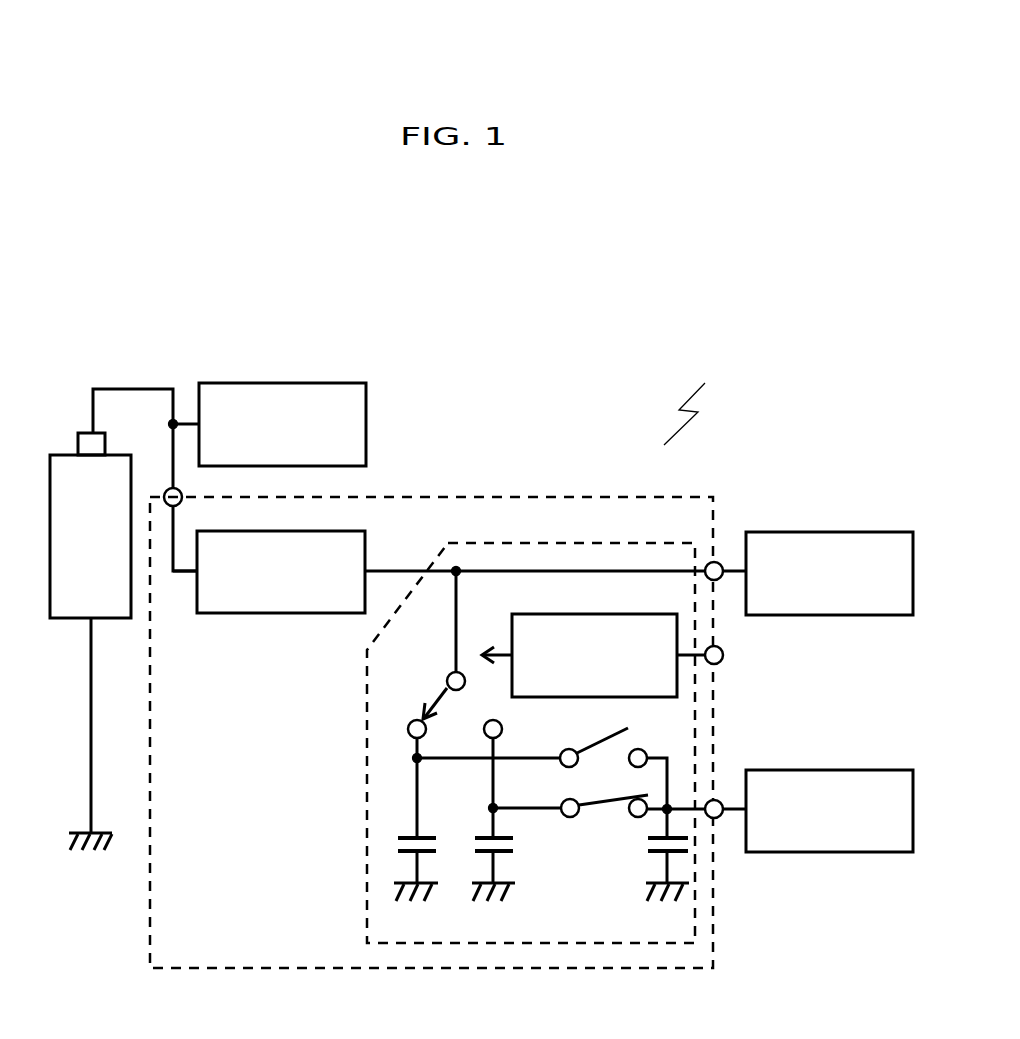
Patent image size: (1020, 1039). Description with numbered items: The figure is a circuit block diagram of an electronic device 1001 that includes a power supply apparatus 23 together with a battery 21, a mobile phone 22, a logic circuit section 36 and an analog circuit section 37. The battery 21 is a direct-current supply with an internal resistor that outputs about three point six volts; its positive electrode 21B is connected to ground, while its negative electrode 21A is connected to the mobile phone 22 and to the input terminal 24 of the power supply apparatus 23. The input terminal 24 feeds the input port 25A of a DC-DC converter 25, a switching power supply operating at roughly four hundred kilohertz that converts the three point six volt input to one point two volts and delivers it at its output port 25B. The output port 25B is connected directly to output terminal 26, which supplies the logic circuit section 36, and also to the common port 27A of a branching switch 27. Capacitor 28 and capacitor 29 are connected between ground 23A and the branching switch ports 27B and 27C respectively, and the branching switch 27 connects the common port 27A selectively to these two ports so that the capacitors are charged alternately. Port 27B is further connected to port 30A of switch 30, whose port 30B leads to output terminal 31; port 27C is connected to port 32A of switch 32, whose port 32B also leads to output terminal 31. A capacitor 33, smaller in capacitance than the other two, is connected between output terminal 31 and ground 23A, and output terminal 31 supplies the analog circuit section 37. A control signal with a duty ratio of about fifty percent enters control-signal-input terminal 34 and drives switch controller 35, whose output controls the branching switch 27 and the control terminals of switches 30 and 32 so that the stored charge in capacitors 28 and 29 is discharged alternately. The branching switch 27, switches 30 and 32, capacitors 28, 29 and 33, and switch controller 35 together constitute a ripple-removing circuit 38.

The electronic device 1001 is at (709, 401).
The battery 21 is at (60, 453).
The negative electrode 21A is at (94, 432).
The positive electrode 21B is at (90, 618).
The mobile phone 22 is at (267, 383).
The power supply apparatus 23 is at (457, 496).
The ground 23A is at (658, 905).
The input terminal 24 is at (168, 489).
The DC-DC converter 25 is at (310, 530).
The input port 25A is at (193, 572).
The output port 25B is at (372, 570).
The output terminal 26 is at (718, 562).
The branching switch 27 is at (438, 700).
The common port 27A is at (448, 677).
The port 27B is at (409, 727).
The port 27C is at (484, 732).
The capacitor 28 is at (398, 839).
The capacitor 29 is at (482, 840).
The switch 30 is at (600, 747).
The port 30A is at (561, 757).
The port 30B is at (643, 751).
The output terminal 31 is at (718, 800).
The switch 32 is at (605, 806).
The port 32A is at (566, 818).
The port 32B is at (634, 818).
The capacitor 33 is at (682, 850).
The control-signal-input terminal 34 is at (723, 658).
The switch controller 35 is at (550, 614).
The logic circuit section 36 is at (787, 532).
The analog circuit section 37 is at (800, 770).
The ripple-removing circuit 38 is at (559, 544).